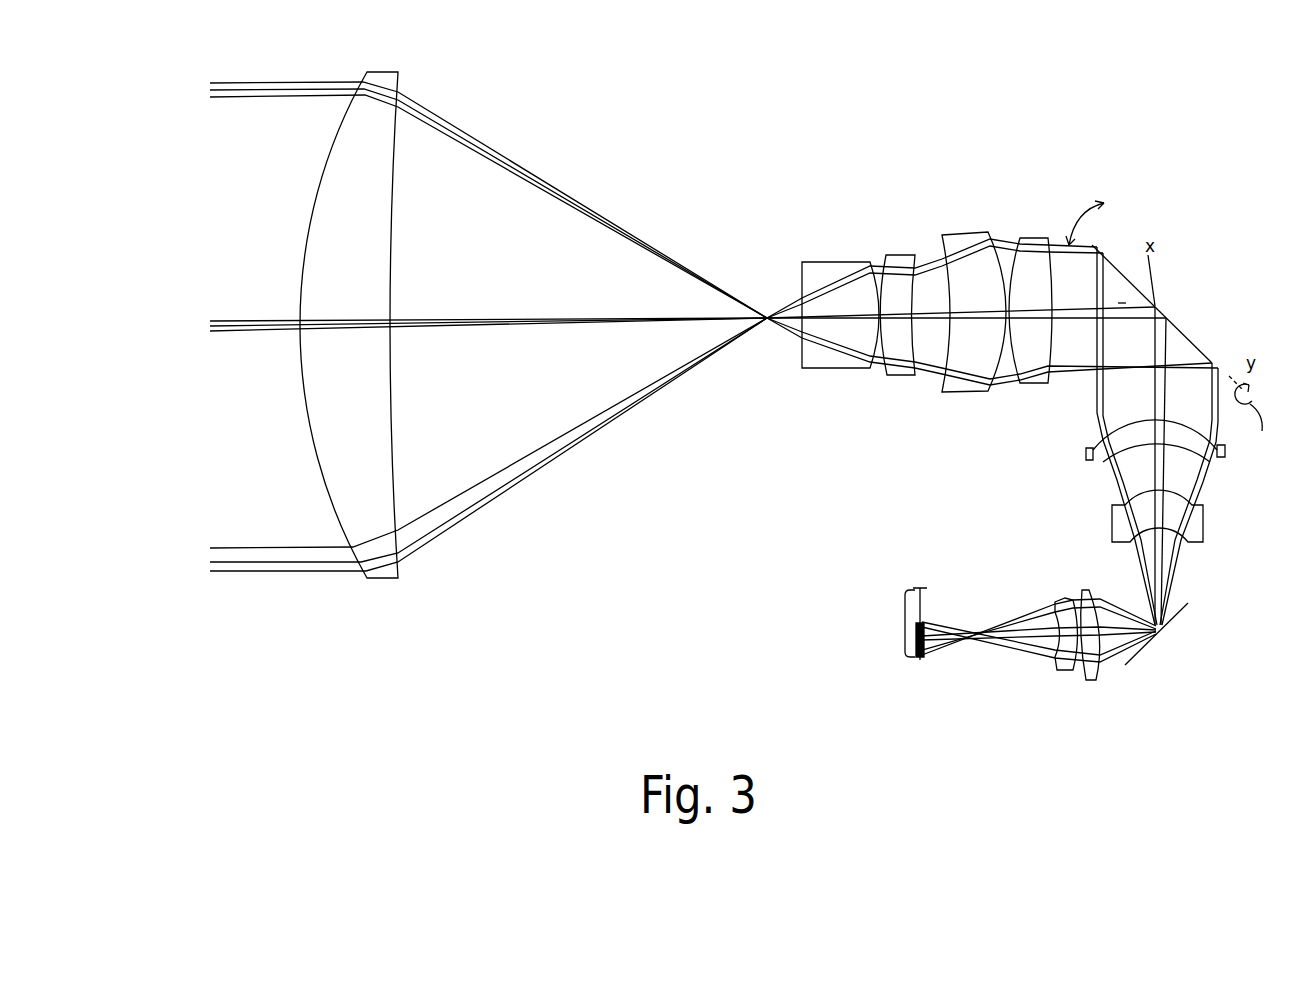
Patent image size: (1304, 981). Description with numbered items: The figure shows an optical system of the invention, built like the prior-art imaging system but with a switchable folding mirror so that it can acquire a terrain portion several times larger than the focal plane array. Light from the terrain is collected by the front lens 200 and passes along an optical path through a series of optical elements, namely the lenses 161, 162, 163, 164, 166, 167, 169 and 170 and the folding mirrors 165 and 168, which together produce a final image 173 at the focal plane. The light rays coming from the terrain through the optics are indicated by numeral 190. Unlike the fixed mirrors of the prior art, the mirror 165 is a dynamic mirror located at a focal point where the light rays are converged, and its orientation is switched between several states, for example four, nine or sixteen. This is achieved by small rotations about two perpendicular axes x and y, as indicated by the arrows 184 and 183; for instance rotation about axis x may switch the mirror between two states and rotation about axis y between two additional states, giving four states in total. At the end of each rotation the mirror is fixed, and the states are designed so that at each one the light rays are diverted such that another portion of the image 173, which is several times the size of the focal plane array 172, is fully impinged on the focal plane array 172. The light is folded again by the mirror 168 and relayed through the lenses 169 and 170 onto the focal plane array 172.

The front lens 200 is at (290, 222).
The lens 161 is at (836, 262).
The lens 162 is at (898, 253).
The lens 163 is at (963, 233).
The lens 164 is at (1033, 237).
The dynamic folding mirror 165 is at (1180, 326).
The lens 166 is at (1088, 455).
The lens 167 is at (1110, 528).
The folding mirror 168 is at (1177, 618).
The lens 169 is at (1084, 676).
The lens 170 is at (1057, 667).
The focal plane array 172 is at (907, 643).
The image 173 is at (905, 621).
The arrow indicating rotation about axis y 183 is at (1259, 419).
The arrow indicating rotation about axis x 184 is at (1104, 218).
The light rays 190 is at (1122, 304).